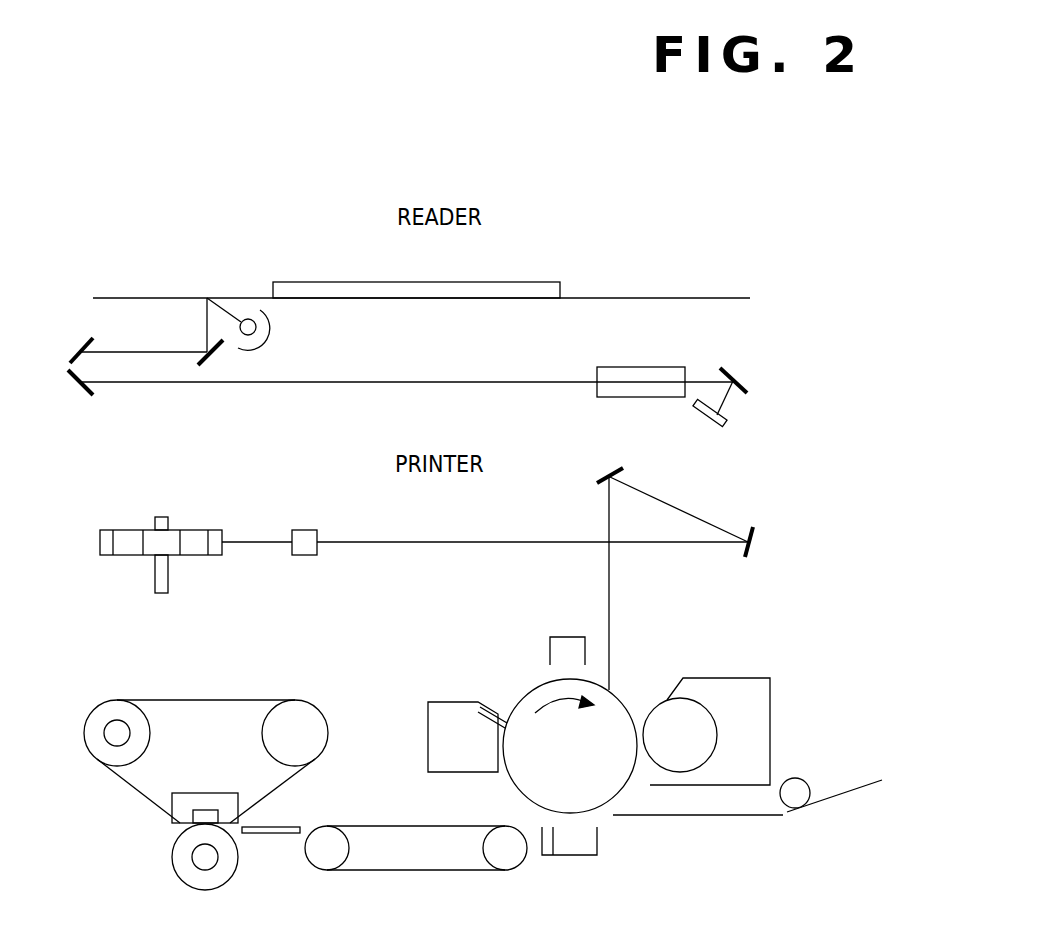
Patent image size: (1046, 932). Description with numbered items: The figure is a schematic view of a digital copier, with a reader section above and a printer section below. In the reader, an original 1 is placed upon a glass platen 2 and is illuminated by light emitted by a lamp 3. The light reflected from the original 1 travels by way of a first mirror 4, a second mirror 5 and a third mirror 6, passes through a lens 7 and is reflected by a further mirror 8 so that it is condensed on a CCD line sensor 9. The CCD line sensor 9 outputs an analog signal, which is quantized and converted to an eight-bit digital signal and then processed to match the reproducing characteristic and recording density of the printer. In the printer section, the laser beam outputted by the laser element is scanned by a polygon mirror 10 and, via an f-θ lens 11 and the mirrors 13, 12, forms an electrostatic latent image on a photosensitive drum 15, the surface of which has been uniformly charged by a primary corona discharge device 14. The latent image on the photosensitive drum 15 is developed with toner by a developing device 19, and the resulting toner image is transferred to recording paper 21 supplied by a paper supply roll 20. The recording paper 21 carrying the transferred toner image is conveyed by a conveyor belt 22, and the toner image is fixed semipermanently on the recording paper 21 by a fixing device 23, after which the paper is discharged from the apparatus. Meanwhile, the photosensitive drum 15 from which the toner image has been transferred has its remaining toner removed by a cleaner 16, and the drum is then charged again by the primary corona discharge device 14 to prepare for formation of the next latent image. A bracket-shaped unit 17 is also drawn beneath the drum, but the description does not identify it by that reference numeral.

The original 1 is at (511, 282).
The glass platen 2 is at (606, 298).
The lamp 3 is at (270, 338).
The mirror 4 is at (208, 363).
The mirror 5 is at (83, 347).
The mirror 6 is at (87, 388).
The lens 7 is at (640, 367).
The mirror 8 is at (733, 378).
The CCD line sensor 9 is at (728, 420).
The polygon mirror 10 is at (198, 530).
The f-θ lens 11 is at (308, 530).
The mirror 12 is at (603, 477).
The mirror 13 is at (755, 547).
The primary corona discharge device 14 is at (577, 637).
The photosensitive drum 15 is at (540, 683).
The cleaner 16 is at (453, 702).
The cleaner 17 is at (572, 856).
The developing device 19 is at (740, 678).
The paper supply roll 20 is at (802, 780).
The recording paper 21 is at (680, 816).
The conveyor belt 22 is at (402, 872).
The fixing device 23 is at (203, 700).